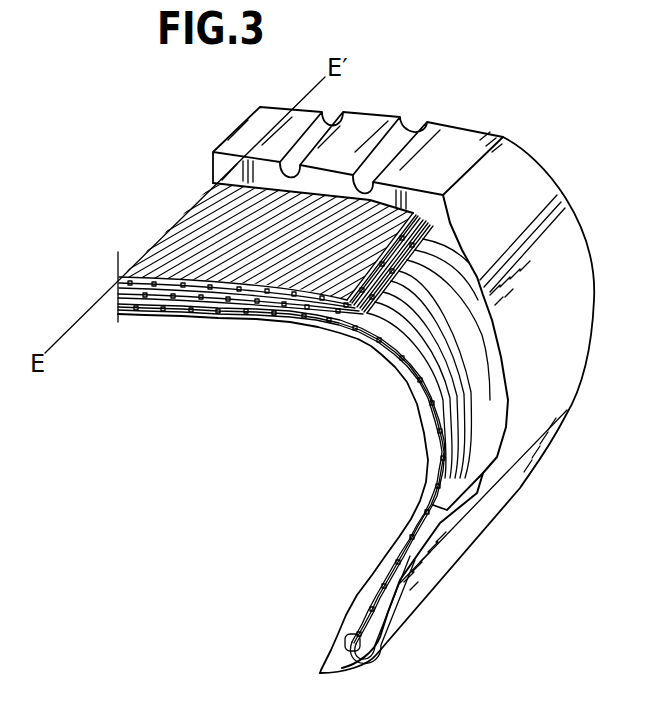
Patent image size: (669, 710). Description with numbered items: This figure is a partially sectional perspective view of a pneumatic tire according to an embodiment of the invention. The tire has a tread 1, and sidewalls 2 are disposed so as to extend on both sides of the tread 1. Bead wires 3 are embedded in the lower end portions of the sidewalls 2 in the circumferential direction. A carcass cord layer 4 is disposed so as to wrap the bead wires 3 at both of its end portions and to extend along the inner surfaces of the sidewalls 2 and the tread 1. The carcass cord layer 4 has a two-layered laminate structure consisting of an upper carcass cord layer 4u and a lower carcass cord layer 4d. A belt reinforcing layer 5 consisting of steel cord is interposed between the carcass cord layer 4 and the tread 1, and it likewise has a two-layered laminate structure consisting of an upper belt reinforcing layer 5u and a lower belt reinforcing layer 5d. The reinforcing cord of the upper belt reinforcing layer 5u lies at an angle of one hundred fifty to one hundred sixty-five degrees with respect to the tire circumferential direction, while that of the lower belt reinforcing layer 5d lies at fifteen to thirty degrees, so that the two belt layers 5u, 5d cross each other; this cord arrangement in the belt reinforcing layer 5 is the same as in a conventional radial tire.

The tread 1 is at (363, 120).
The sidewalls 2 is at (553, 344).
The bead wires 3 is at (347, 637).
The carcass cord layer 4 is at (358, 456).
The upper carcass cord layer 4u is at (440, 473).
The lower carcass cord layer 4d is at (430, 497).
The belt reinforcing layer 5 is at (264, 266).
The upper belt reinforcing layer 5u is at (157, 277).
The lower belt reinforcing layer 5d is at (152, 293).